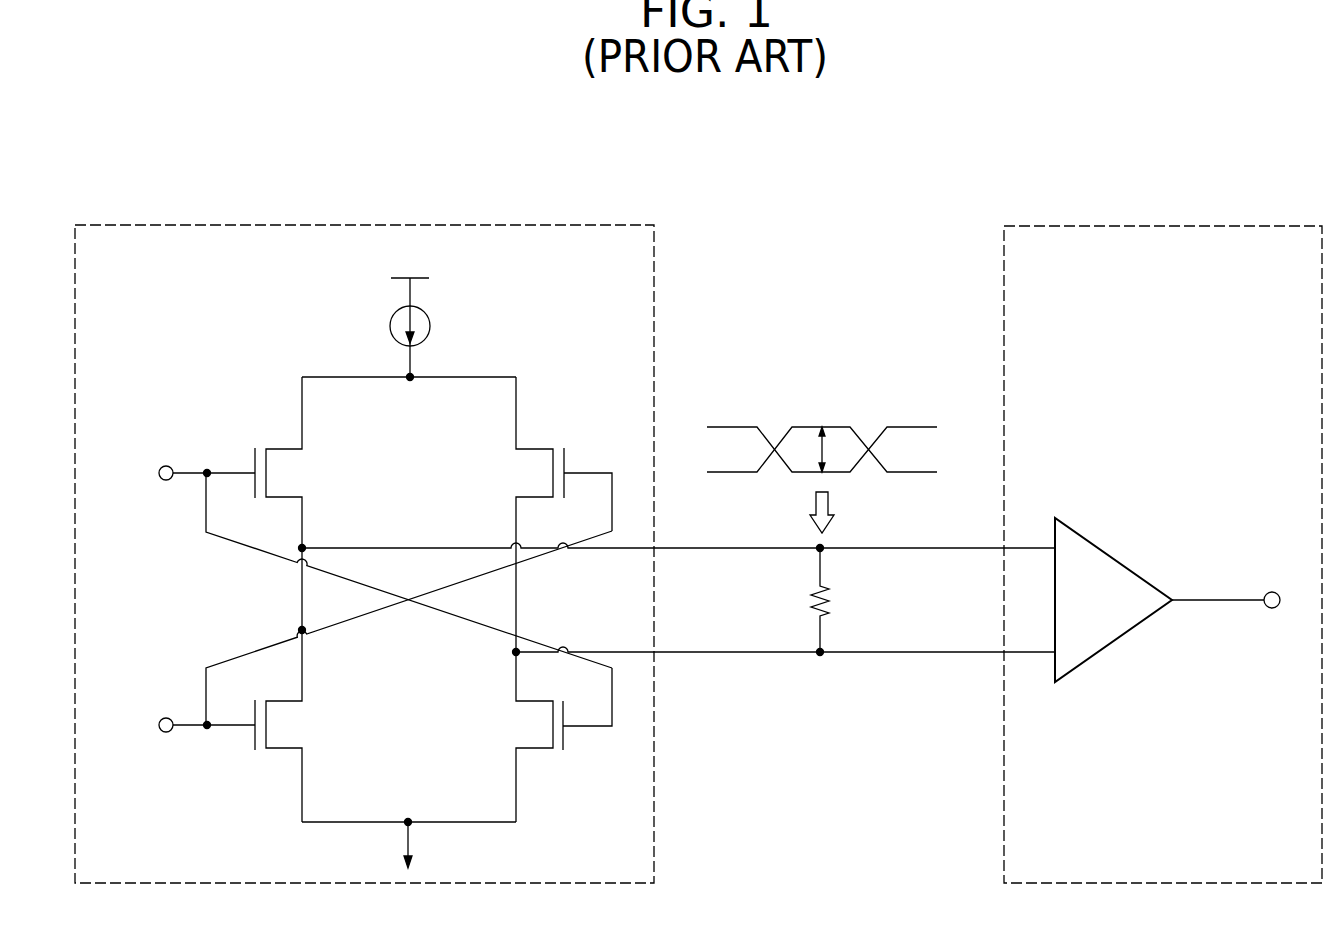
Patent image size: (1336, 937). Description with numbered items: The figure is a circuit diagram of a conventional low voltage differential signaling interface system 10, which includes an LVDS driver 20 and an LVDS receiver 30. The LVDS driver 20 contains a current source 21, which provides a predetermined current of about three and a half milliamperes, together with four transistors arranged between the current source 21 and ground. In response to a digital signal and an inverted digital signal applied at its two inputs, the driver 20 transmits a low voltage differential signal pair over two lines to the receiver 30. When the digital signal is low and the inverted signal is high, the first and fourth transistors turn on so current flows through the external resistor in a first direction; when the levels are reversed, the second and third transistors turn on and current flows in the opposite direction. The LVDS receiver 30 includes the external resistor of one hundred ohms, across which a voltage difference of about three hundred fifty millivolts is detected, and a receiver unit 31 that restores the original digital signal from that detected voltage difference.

The low voltage differential signaling (LVDS) interface system 10 is at (749, 144).
The low voltage differential signaling (LVDS) driver 20 is at (654, 293).
The current source 21 is at (423, 308).
The low voltage differential signaling (LVDS) receiver 30 is at (1004, 290).
The receiver unit 31 is at (1121, 560).